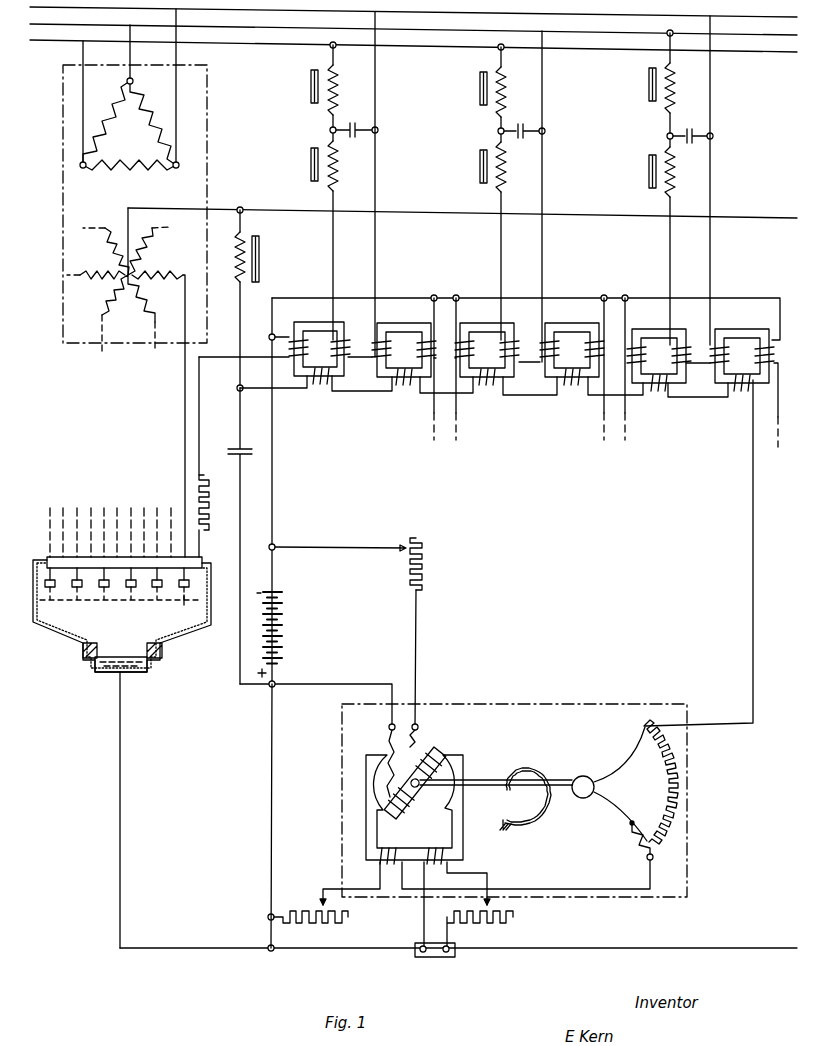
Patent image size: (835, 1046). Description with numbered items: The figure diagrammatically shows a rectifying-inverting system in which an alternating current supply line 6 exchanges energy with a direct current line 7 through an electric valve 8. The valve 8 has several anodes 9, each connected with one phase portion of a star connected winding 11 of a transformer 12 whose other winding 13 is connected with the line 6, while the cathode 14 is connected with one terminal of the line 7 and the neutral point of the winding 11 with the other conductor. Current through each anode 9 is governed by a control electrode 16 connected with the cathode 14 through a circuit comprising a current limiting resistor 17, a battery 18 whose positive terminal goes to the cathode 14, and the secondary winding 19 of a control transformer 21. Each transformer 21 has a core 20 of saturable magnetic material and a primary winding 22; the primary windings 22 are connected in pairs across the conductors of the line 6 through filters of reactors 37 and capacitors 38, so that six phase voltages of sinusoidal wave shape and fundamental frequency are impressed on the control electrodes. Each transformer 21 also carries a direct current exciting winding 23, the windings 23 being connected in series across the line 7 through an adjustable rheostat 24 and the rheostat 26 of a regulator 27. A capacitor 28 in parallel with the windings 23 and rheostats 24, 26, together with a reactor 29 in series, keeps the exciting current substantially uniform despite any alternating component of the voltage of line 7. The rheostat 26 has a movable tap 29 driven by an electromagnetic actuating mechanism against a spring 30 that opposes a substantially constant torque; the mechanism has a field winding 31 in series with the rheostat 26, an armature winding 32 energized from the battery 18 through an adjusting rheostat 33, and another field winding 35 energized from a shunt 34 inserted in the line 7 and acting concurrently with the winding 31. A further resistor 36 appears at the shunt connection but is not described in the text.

The alternating current supply line 6 is at (768, 35).
The direct current line 7 is at (757, 220).
The electric valve 8 is at (62, 641).
The anodes 9 is at (181, 590).
The star connected winding 11 is at (110, 312).
The transformer 12 is at (208, 90).
The winding 13 is at (122, 178).
The cathode 14 is at (106, 674).
The control electrode 16 is at (187, 613).
The current limiting resistor 17 is at (210, 508).
The battery 18 is at (282, 644).
The secondary winding 19 is at (296, 336).
The core 20 is at (316, 330).
The control transformer 21 is at (322, 415).
The primary winding 22 is at (338, 336).
The direct current exciting winding 23 is at (320, 349).
The adjustable rheostat 24 is at (293, 926).
The rheostat 26 is at (653, 852).
The regulator 27 is at (556, 704).
The capacitor 28 is at (244, 452).
The reactor / movable tap 29 is at (228, 256).
The spring 30 is at (530, 768).
The field winding 31 is at (388, 844).
The armature winding 32 is at (430, 760).
The adjusting rheostat 33 is at (424, 578).
The shunt 34 is at (433, 960).
The winding 35 is at (432, 850).
The resistor 36 is at (481, 926).
The reactors 37 is at (339, 84).
The capacitors 38 is at (343, 124).